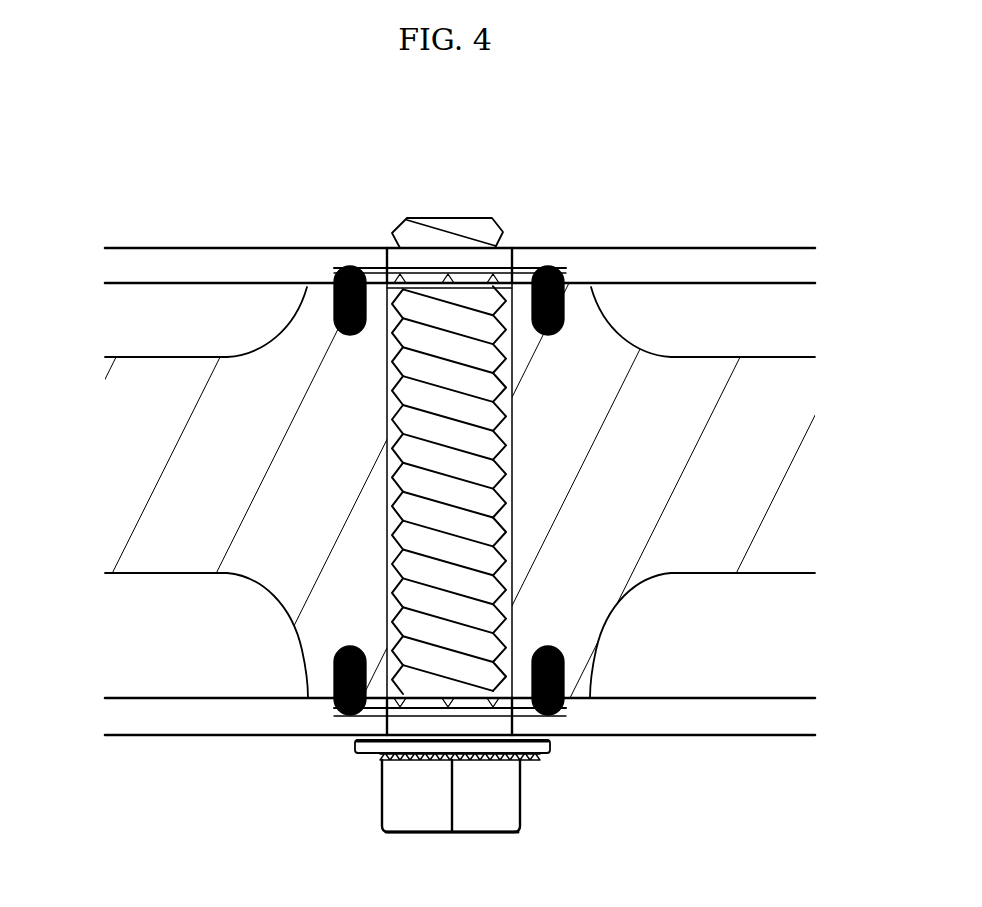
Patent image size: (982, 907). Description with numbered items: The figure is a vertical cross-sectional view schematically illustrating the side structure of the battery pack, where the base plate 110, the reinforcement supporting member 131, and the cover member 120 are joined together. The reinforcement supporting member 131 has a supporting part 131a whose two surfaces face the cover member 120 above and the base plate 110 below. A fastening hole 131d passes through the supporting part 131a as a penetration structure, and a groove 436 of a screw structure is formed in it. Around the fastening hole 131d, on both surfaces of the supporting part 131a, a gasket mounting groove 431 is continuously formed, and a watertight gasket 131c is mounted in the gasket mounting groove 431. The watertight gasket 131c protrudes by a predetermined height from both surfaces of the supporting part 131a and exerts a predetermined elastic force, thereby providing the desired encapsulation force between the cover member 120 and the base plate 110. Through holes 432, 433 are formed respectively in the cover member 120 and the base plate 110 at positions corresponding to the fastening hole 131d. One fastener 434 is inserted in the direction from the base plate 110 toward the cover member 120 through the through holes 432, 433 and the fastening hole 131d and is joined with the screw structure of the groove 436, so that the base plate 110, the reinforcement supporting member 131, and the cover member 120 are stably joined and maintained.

The base plate 110 is at (676, 735).
The cover member 120 is at (704, 248).
The reinforcement supporting member 131 is at (245, 296).
The supporting part 131a is at (305, 288).
The watertight gasket 131c is at (560, 282).
The fastening hole 131d is at (412, 505).
The gasket mounting groove 431 is at (563, 332).
The through hole 432 is at (384, 263).
The through hole 433 is at (520, 722).
The fastener 434 is at (383, 800).
The groove of a screw structure 436 is at (390, 552).